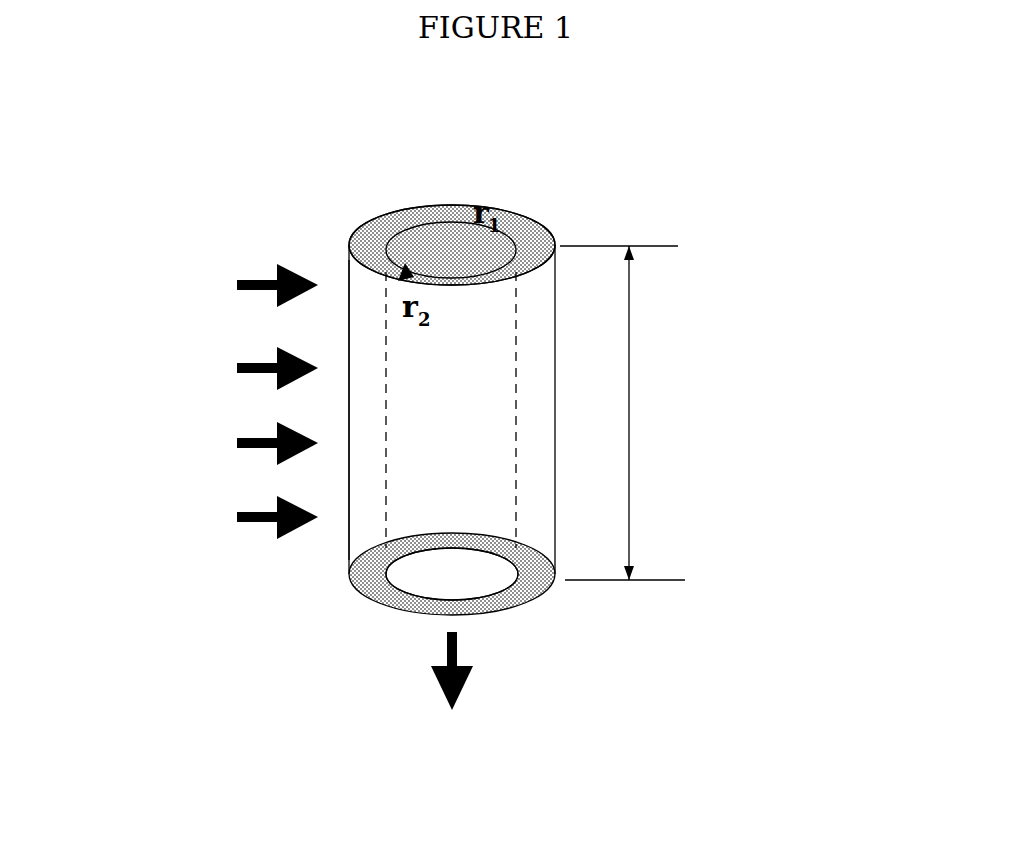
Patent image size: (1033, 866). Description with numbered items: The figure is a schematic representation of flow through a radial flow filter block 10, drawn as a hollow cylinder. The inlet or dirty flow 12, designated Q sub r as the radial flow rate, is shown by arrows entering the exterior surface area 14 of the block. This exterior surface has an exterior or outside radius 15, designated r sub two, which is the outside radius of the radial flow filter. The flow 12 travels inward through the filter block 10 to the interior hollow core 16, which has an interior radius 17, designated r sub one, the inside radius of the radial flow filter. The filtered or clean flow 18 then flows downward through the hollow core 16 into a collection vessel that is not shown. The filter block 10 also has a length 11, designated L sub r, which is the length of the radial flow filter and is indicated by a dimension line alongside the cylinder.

The radial flow filter block 10 is at (462, 178).
The length 11 is at (683, 408).
The inlet flow 12 is at (162, 392).
The exterior surface area 14 is at (350, 278).
The outside radius 15 is at (432, 260).
The interior hollow core 16 is at (481, 560).
The interior radius 17 is at (492, 258).
The clean flow 18 is at (465, 690).